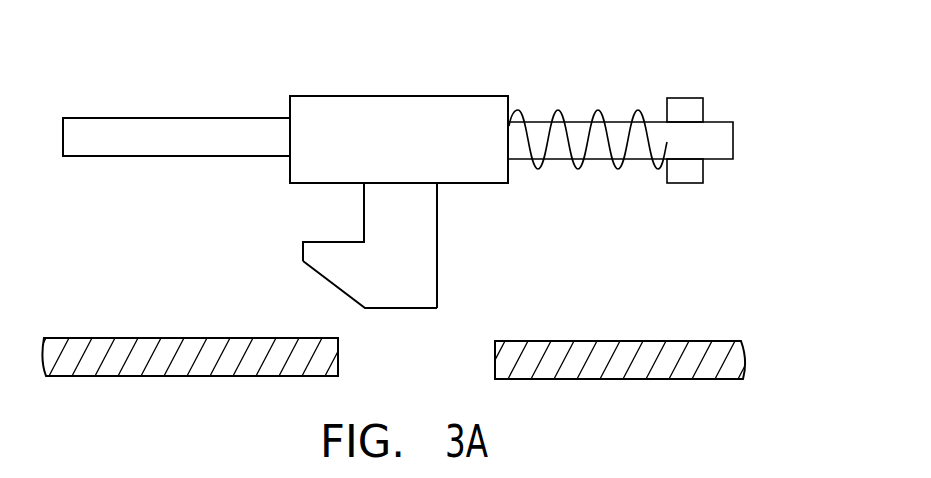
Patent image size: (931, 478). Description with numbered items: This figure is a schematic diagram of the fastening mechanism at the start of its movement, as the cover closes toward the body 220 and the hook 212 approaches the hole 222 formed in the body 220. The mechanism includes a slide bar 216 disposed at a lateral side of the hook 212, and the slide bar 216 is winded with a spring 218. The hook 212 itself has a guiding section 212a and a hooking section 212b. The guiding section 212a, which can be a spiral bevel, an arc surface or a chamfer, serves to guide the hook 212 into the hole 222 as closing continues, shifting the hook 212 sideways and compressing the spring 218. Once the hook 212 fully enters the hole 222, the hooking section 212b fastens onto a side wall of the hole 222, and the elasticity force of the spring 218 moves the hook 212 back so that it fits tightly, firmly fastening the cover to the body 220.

The hook 212 is at (417, 90).
The guiding section 212a is at (315, 270).
The hooking section 212b is at (364, 207).
The slide bar 216 is at (722, 121).
The spring 218 is at (597, 112).
The body 220 is at (640, 341).
The hole 222 is at (457, 345).